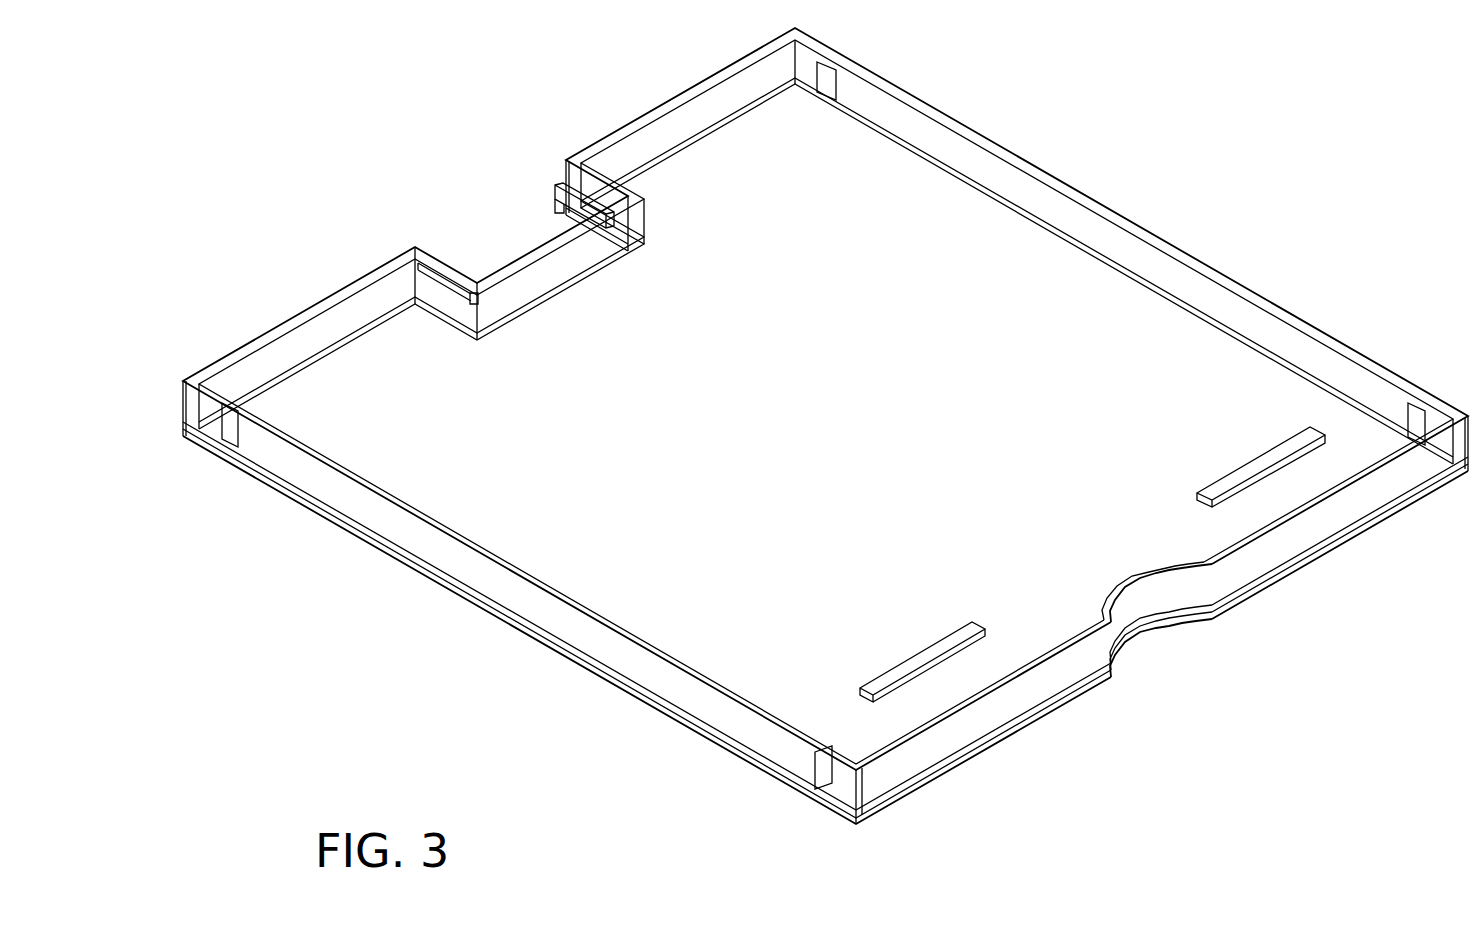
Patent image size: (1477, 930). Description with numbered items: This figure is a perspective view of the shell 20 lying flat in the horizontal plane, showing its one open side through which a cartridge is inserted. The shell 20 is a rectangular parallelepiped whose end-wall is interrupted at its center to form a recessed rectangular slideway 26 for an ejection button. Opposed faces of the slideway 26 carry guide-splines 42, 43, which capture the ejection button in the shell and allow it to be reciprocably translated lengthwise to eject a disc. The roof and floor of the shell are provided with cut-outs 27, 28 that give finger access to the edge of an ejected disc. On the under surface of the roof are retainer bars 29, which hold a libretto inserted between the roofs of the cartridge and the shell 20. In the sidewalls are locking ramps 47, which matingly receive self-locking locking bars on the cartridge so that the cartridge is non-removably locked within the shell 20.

The shell 20 is at (663, 536).
The slideway 26 is at (416, 245).
The cut-out 27 is at (1140, 582).
The cut-out 28 is at (1133, 632).
The bars 29 is at (918, 660).
The guide-spline 42 is at (462, 290).
The guide-spline 43 is at (556, 188).
The locking ramp 47 is at (228, 424).